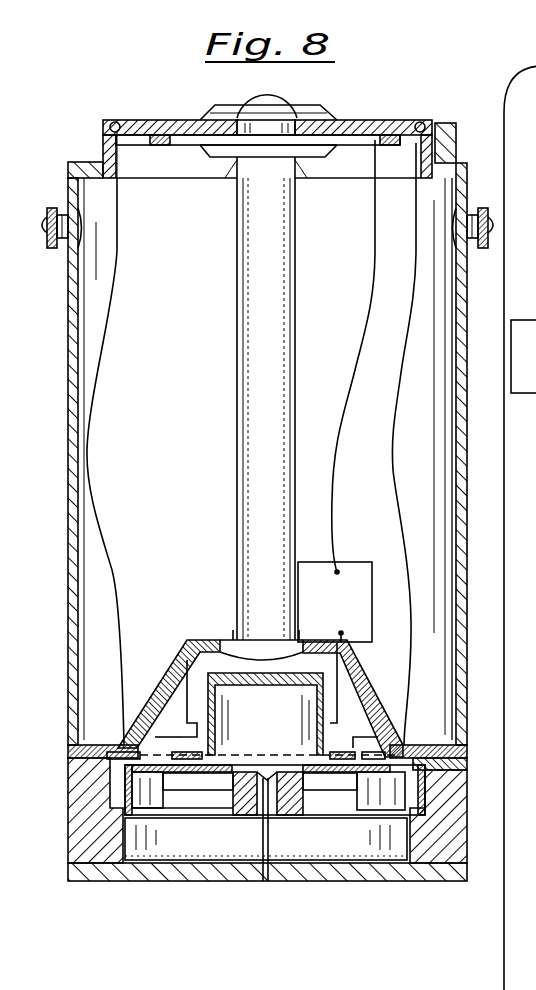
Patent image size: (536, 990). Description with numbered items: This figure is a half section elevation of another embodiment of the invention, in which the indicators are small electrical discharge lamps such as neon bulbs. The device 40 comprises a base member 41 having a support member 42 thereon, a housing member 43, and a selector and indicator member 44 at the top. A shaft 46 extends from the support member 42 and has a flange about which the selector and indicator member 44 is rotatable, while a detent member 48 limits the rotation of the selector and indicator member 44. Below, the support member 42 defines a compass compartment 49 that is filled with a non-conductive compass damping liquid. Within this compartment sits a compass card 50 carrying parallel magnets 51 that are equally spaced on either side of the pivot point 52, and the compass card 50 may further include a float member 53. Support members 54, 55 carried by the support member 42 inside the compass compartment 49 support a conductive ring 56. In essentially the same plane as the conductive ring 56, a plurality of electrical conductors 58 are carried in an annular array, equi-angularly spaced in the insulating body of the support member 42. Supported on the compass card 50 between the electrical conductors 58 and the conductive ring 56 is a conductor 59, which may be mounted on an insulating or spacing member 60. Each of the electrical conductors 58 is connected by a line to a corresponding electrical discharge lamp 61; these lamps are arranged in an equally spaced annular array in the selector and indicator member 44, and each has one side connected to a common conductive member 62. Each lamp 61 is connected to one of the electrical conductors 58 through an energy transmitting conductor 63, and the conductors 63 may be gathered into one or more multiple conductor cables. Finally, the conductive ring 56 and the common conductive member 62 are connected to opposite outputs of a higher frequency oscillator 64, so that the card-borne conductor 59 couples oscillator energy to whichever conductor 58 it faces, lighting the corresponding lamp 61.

The device 40 is at (91, 102).
The base member 41 is at (172, 880).
The support member 42 is at (92, 853).
The housing member 43 is at (70, 437).
The selector and indicator member 44 is at (172, 128).
The shaft 46 is at (248, 370).
The detent member 48 is at (235, 150).
The compass compartment 49 is at (214, 640).
The compass card 50 is at (187, 770).
The parallel magnets 51 is at (222, 778).
The pivot point 52 is at (272, 785).
The float member 53 is at (258, 690).
The support member 54 is at (372, 692).
The support member 55 is at (172, 687).
The conductive ring 56 is at (190, 752).
The electrical conductors 58 is at (417, 760).
The conductor 59 is at (390, 745).
The insulating or spacing member 60 is at (372, 785).
The electrical discharge lamp 61 is at (116, 122).
The common conductive member 62 is at (366, 142).
The conductor 63 is at (393, 441).
The higher frequency oscillator 64 is at (361, 567).